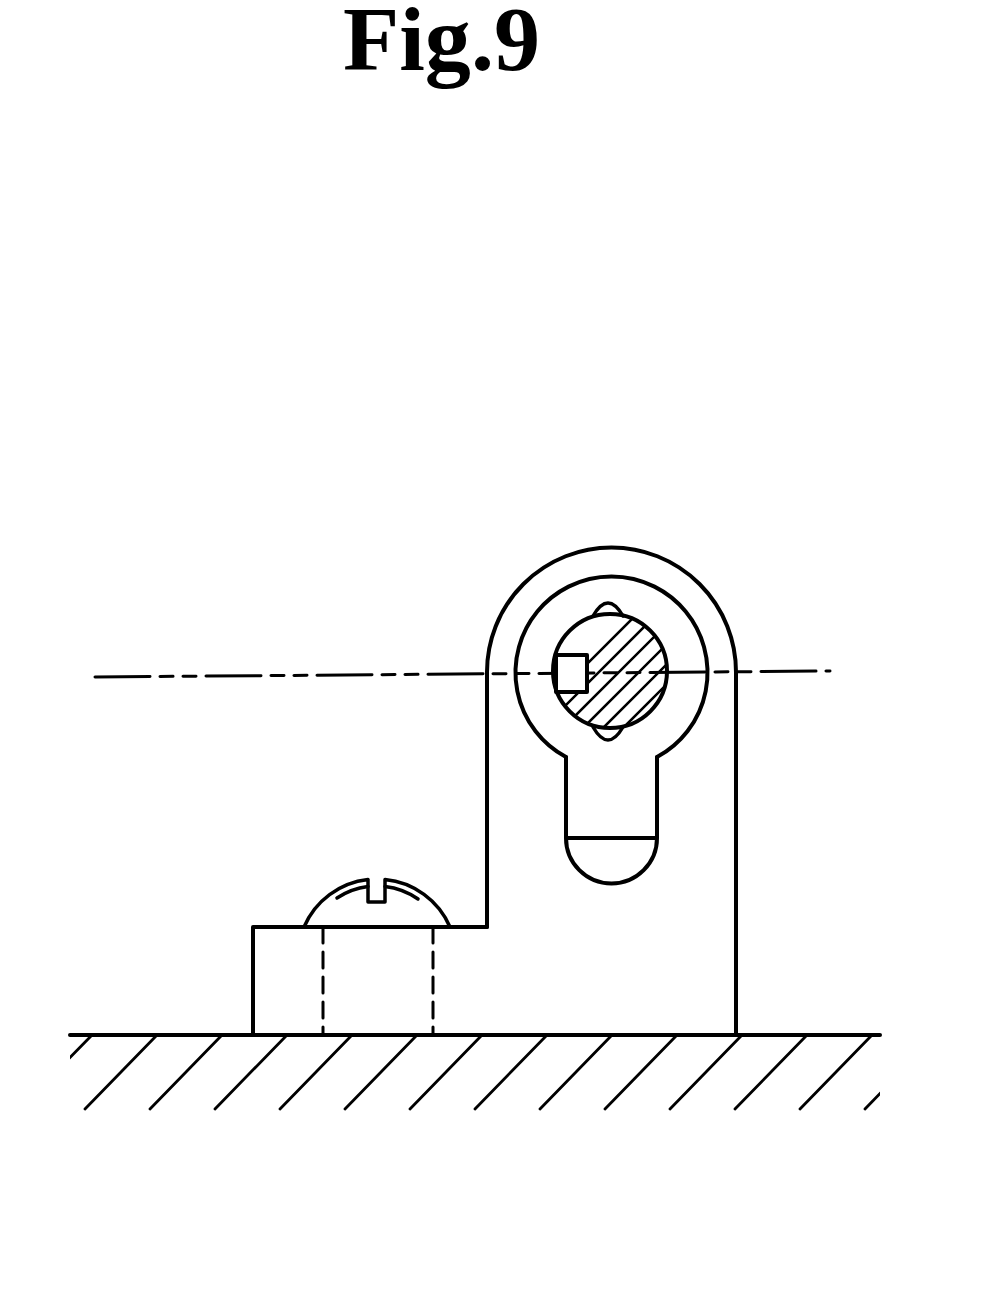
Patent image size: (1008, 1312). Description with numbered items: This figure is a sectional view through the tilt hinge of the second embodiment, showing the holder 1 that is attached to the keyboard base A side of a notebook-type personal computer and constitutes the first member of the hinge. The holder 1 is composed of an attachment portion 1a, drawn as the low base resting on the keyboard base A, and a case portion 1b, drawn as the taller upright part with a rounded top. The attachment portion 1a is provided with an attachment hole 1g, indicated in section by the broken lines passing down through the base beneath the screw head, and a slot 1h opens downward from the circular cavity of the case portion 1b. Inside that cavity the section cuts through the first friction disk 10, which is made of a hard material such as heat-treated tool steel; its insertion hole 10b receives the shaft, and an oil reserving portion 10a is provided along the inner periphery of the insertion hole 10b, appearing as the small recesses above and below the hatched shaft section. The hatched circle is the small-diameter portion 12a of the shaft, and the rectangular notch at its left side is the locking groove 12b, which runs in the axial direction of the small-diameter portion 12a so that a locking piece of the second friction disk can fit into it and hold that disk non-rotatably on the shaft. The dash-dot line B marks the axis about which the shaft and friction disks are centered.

The holder 1 is at (494, 848).
The attachment portion 1a is at (270, 965).
The case portion 1b is at (515, 588).
The attachment hole 1g is at (323, 997).
The slot 1h is at (588, 805).
The first friction disk 10 is at (619, 644).
The oil reserving portion 10a is at (613, 602).
The insertion hole 10b is at (655, 653).
The small-diameter portion 12a is at (633, 632).
The locking groove 12b is at (560, 677).
The keyboard base A is at (802, 998).
The axis B is at (235, 668).